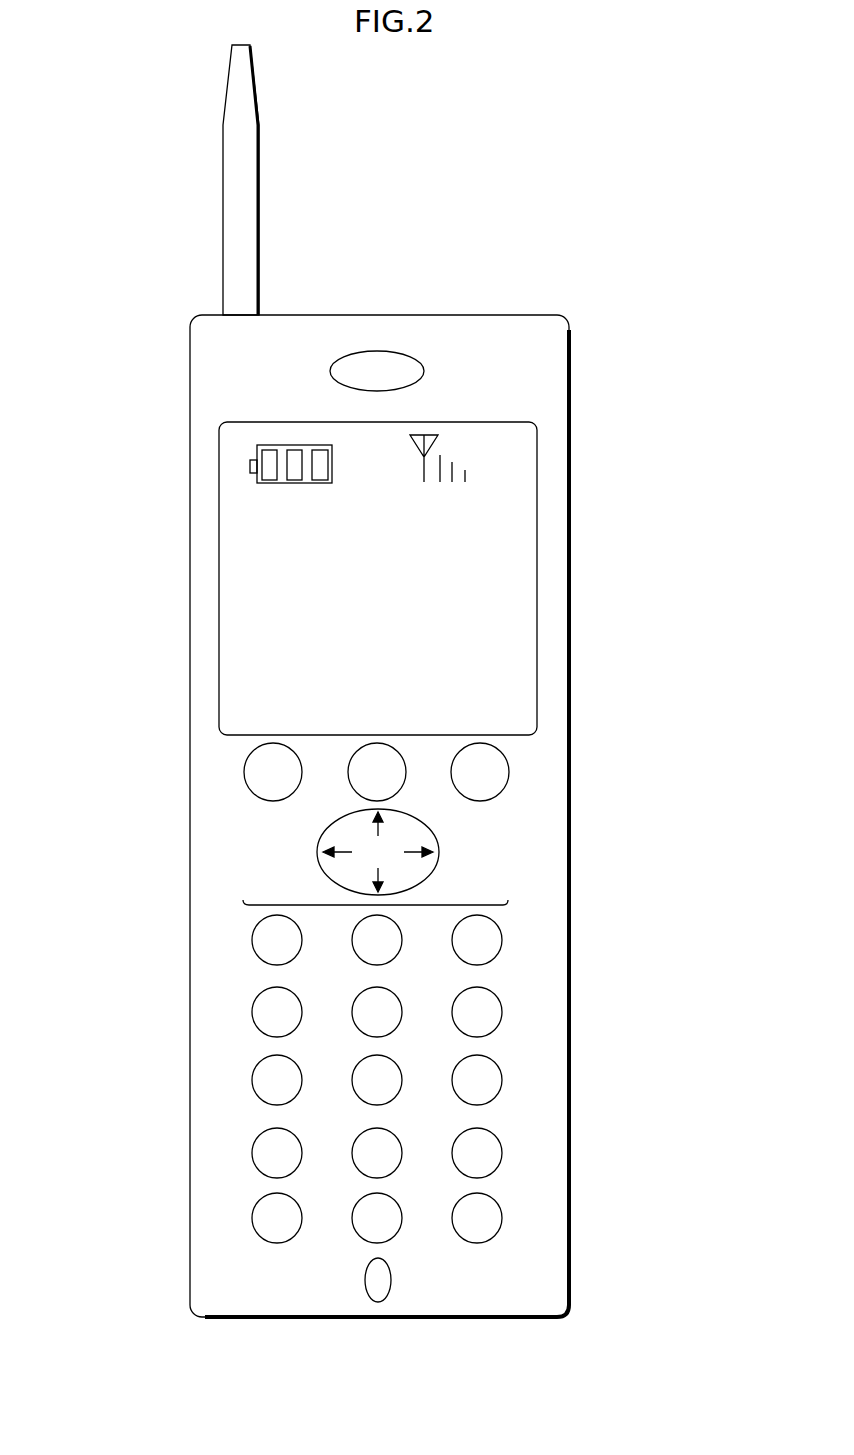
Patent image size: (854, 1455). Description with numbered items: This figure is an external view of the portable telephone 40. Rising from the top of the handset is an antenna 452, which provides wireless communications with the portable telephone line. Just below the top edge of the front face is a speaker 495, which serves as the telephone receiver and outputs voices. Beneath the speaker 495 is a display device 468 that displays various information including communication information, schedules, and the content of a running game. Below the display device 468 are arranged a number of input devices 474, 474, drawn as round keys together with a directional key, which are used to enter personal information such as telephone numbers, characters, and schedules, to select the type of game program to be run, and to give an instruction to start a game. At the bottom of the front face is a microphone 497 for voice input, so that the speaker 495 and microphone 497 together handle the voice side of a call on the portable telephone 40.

The portable telephone 40 is at (582, 960).
The antenna 452 is at (262, 239).
The speaker 495 is at (382, 352).
The display device 468 is at (217, 693).
The input devices 474 is at (350, 787).
The microphone 497 is at (393, 1298).